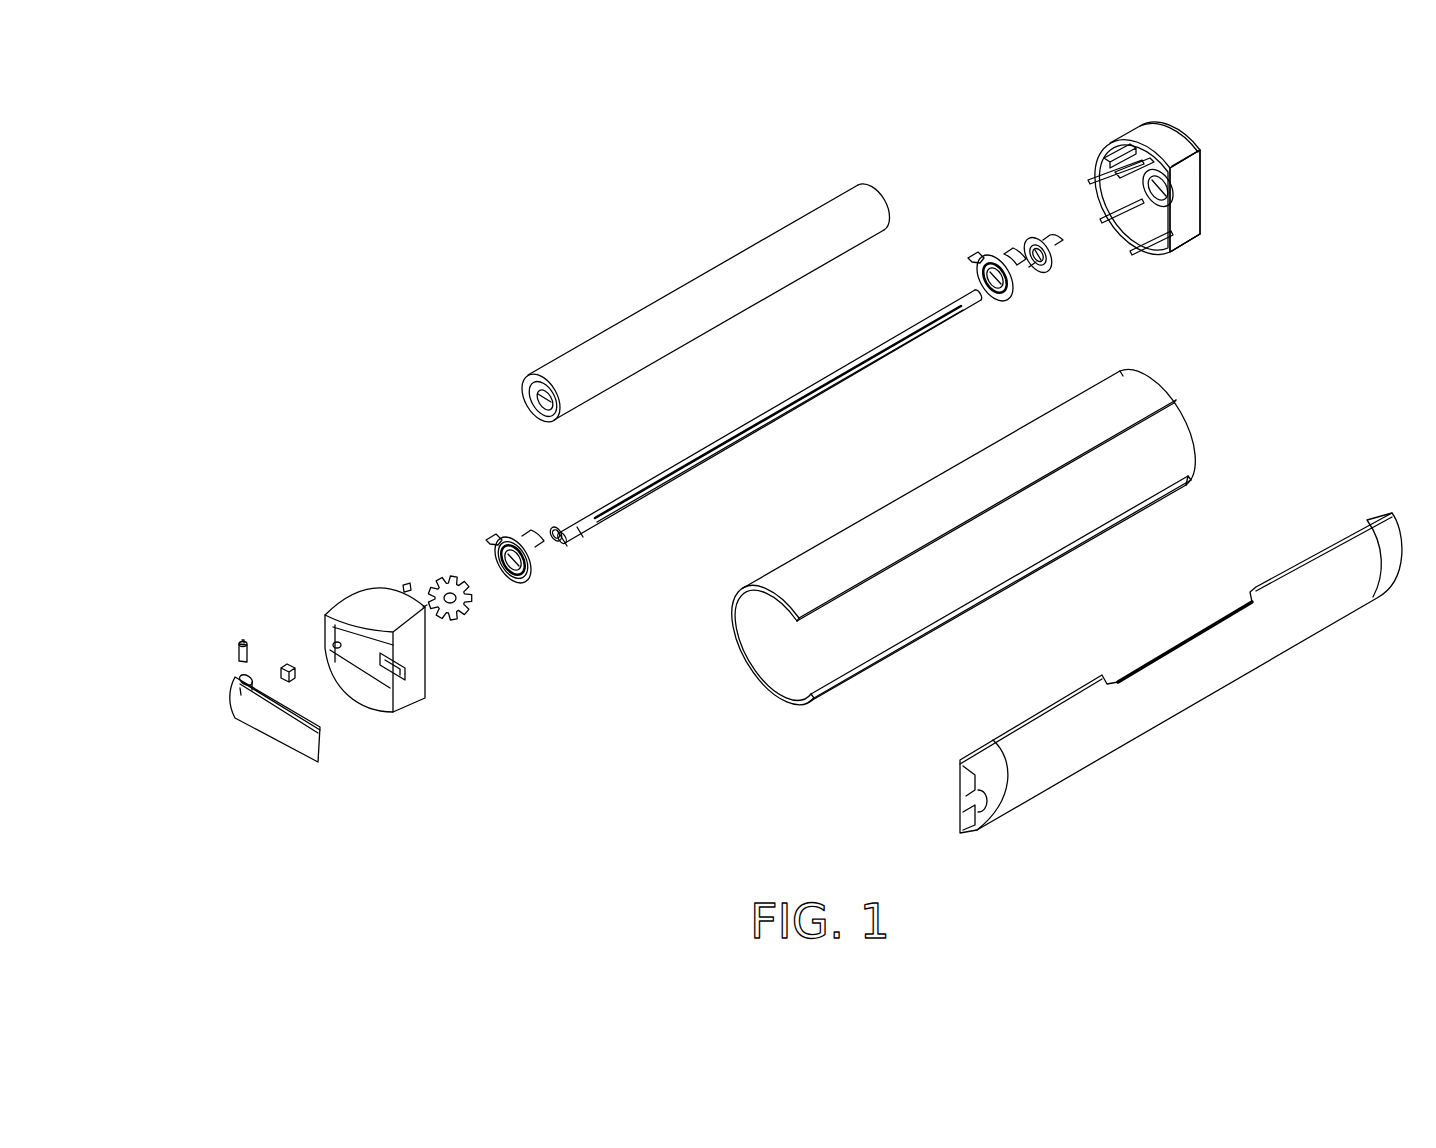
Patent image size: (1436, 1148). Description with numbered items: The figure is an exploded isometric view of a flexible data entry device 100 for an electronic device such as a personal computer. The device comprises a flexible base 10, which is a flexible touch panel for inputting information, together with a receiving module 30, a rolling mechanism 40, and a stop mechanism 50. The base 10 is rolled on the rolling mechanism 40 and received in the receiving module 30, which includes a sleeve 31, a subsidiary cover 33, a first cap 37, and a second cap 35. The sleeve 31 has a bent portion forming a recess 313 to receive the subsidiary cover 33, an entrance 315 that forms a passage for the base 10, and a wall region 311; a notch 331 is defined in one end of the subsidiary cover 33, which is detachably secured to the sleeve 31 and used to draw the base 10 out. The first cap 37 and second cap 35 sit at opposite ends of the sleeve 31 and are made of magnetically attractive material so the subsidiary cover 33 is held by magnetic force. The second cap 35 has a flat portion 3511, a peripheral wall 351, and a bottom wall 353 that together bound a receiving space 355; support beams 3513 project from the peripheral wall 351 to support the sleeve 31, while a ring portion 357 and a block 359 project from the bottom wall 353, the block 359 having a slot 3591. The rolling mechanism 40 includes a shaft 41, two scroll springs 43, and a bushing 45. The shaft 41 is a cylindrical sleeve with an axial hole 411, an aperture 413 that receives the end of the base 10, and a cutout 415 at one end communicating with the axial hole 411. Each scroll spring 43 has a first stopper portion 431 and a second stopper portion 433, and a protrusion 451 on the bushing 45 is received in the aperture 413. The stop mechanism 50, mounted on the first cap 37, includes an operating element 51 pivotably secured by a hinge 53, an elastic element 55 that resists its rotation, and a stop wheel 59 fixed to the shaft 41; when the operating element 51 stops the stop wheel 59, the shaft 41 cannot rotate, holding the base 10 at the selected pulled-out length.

The flexible data entry device 100 is at (803, 94).
The flexible base 10 is at (573, 363).
The receiving module 30 is at (1272, 683).
The sleeve 31 is at (1262, 362).
The housing top wall 311 is at (1160, 393).
The recess 313 is at (1162, 448).
The entrance 315 is at (820, 697).
The subsidiary cover 33 is at (1318, 575).
The notch 331 is at (962, 805).
The second cap 35 is at (1280, 213).
The peripheral wall 351 is at (1170, 253).
The flat portion 3511 is at (1188, 185).
The support beams 3513 is at (1112, 150).
The bottom wall 353 is at (1160, 215).
The receiving space 355 is at (1136, 232).
The ring portion 357 is at (1192, 155).
The block 359 is at (1150, 132).
The slot 3591 is at (1092, 182).
The first cap 37 is at (365, 592).
The rolling mechanism 40 is at (1015, 173).
The shaft 41 is at (942, 302).
The axial hole 411 is at (565, 545).
The aperture 413 is at (697, 470).
The cutout 415 is at (556, 526).
The scroll spring 43 is at (992, 265).
The first stopper portion 431 is at (495, 546).
The second stopper portion 433 is at (517, 582).
The bushing 45 is at (1032, 235).
The protrusion 451 is at (1038, 270).
The stop mechanism 50 is at (214, 677).
The operating element 51 is at (262, 720).
The hinge 53 is at (240, 643).
The elastic element 55 is at (288, 656).
The stop wheel 59 is at (440, 584).